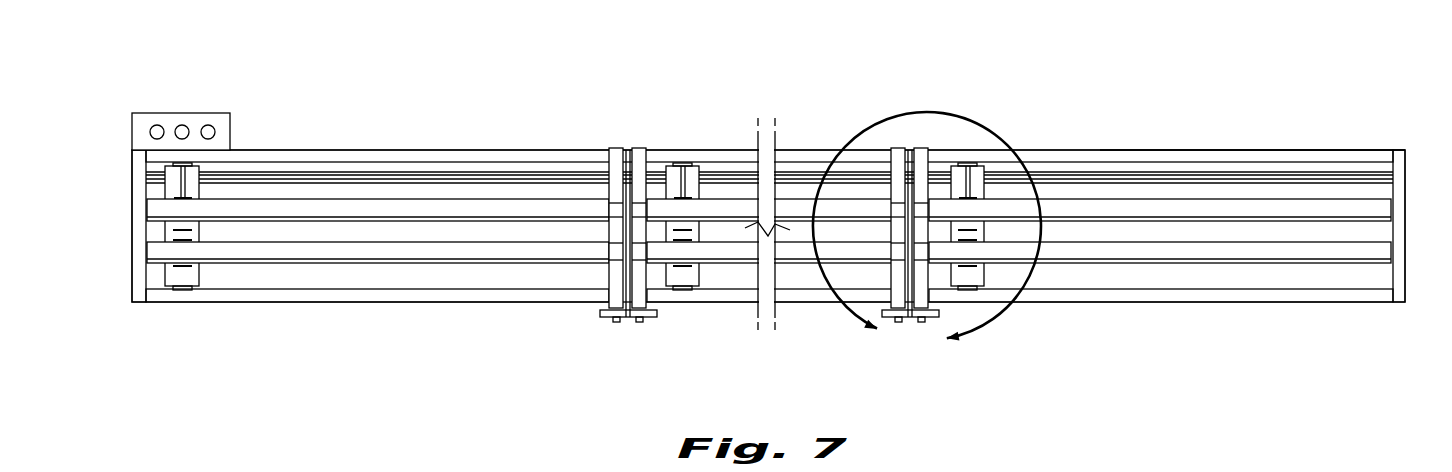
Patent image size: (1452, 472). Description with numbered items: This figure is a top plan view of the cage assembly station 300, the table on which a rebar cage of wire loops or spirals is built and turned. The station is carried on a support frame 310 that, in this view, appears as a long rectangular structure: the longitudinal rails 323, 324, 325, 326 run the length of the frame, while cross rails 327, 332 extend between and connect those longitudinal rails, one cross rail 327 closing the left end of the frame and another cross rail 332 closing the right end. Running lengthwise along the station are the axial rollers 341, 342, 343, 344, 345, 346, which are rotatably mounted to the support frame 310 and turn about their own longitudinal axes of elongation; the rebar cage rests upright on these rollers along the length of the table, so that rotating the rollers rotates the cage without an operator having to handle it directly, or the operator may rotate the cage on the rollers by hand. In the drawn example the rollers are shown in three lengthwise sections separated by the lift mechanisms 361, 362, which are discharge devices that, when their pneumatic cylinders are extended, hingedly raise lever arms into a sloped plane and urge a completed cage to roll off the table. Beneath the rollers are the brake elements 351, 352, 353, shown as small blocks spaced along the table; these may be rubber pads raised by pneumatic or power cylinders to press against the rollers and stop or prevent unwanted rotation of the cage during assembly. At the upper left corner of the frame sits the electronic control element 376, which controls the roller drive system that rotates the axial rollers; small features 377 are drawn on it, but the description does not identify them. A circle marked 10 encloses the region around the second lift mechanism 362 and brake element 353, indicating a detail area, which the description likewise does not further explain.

The cage assembly station 300 is at (1110, 73).
The support frame 310 is at (1276, 147).
The longitudinal rail 323 is at (343, 295).
The longitudinal rail 324 is at (328, 150).
The longitudinal rail 325 is at (797, 302).
The longitudinal rail 326 is at (1225, 302).
The cross rail 327 is at (135, 232).
The cross rail 332 is at (1398, 232).
The axial roller 341 is at (402, 205).
The axial roller 342 is at (475, 250).
The axial roller 343 is at (795, 200).
The axial roller 344 is at (730, 250).
The axial roller 345 is at (1176, 205).
The axial roller 346 is at (1108, 250).
The brake element 351 is at (180, 290).
The brake element 352 is at (690, 195).
The brake element 353 is at (973, 192).
The lift mechanism 361 is at (629, 150).
The lift mechanism 362 is at (910, 147).
The electronic control element 376 is at (143, 105).
The connector holes 377 is at (208, 124).
The detail circle 10 is at (927, 238).